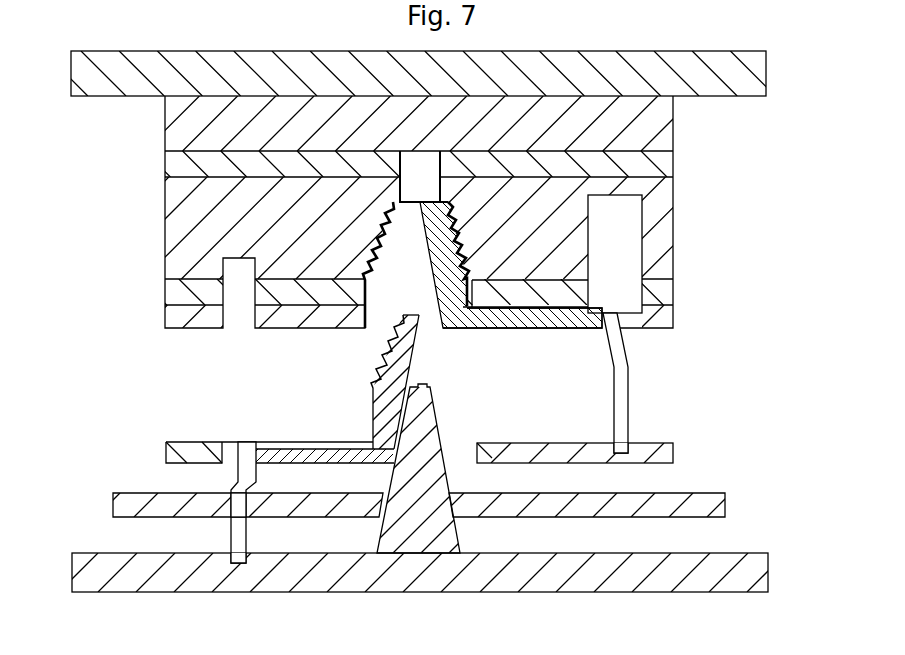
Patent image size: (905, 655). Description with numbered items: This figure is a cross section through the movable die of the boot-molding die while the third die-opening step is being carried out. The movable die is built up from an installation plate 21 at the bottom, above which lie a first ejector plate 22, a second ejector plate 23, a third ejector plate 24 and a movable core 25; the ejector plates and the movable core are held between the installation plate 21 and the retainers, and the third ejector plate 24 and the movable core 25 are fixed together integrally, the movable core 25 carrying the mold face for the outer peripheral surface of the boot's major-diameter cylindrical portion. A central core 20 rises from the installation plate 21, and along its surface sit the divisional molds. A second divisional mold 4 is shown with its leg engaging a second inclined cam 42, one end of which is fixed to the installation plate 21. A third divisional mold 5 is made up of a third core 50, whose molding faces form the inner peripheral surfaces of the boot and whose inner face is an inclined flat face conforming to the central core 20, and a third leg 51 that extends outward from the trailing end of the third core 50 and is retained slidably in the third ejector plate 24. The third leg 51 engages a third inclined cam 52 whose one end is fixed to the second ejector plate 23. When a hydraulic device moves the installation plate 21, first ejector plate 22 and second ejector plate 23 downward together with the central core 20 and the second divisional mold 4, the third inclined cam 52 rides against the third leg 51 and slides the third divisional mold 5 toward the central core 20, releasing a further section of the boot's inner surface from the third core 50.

The movable core 25 is at (165, 288).
The third ejector plate 24 is at (168, 315).
The third core 50 is at (438, 258).
The third divisional mold 5 is at (459, 322).
The third leg 51 is at (523, 324).
The third inclined cam 52 is at (620, 380).
The second divisional mold 4 is at (392, 358).
The central core 20 is at (425, 442).
The second inclined cam 42 is at (240, 478).
The second ejector plate 23 is at (657, 447).
The first ejector plate 22 is at (698, 497).
The installation plate 21 is at (705, 573).